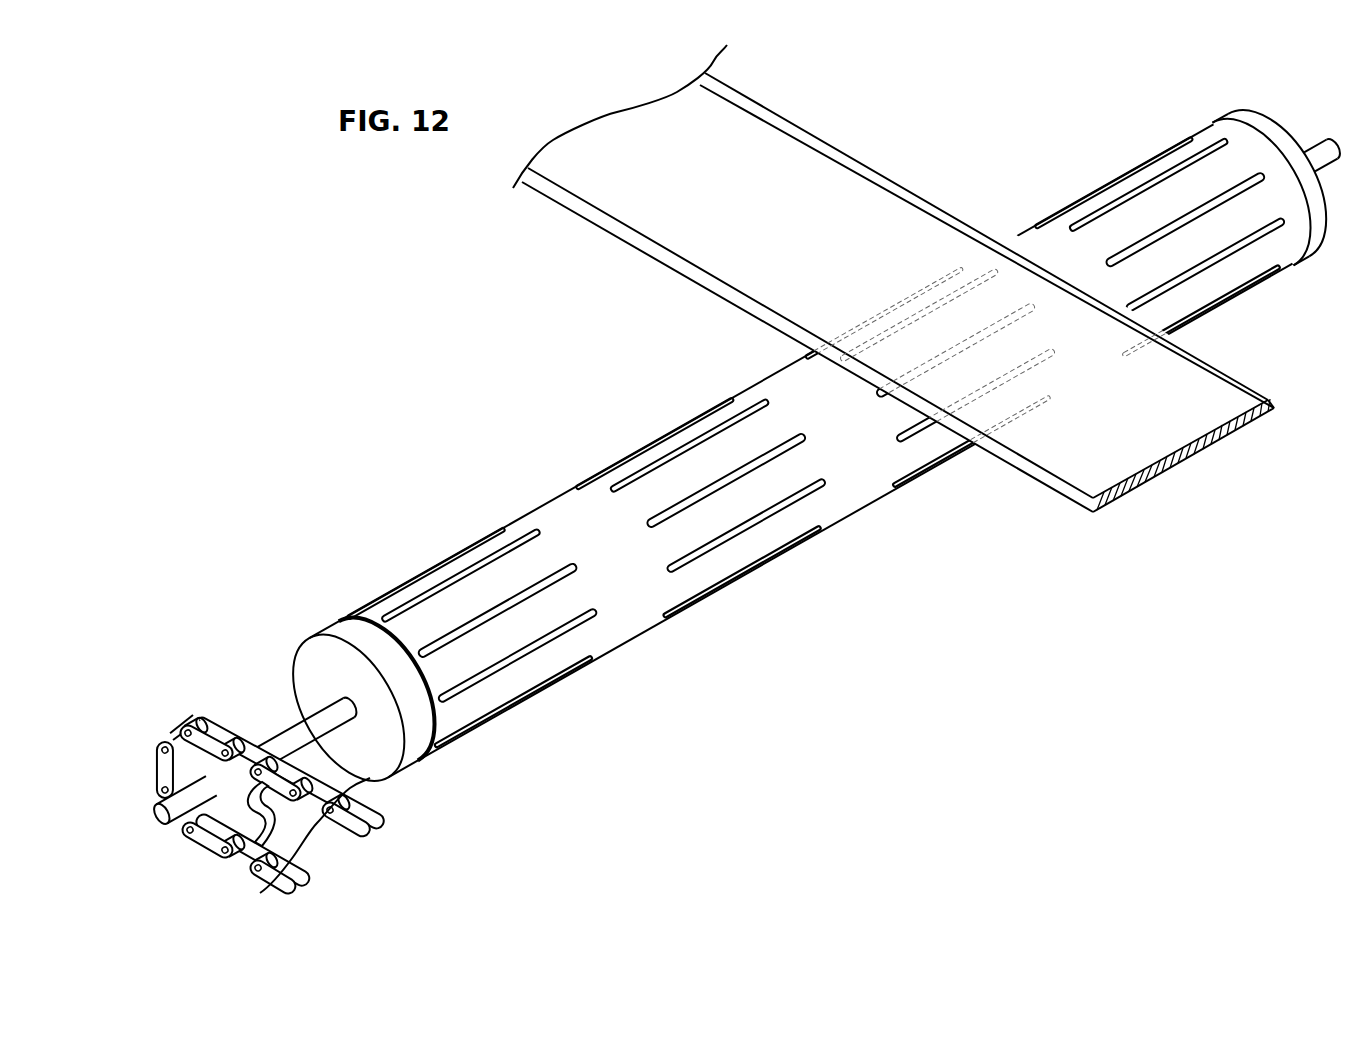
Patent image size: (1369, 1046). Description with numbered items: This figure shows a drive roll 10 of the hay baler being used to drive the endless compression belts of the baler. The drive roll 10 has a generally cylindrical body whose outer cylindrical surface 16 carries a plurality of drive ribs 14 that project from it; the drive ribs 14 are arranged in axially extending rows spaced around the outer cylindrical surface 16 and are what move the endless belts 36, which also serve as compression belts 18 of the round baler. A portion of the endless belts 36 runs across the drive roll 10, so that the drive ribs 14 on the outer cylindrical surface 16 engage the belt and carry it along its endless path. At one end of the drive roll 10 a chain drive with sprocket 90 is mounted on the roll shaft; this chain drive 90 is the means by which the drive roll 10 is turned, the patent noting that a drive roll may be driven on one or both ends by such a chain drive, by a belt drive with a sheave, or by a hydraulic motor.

The drive roll 10 is at (794, 452).
The drive ribs 14 is at (913, 473).
The outer cylindrical surface 16 is at (848, 500).
The compression belts 18 is at (1197, 418).
The endless belts 36 is at (1203, 390).
The chain drive with sprocket 90 is at (199, 728).